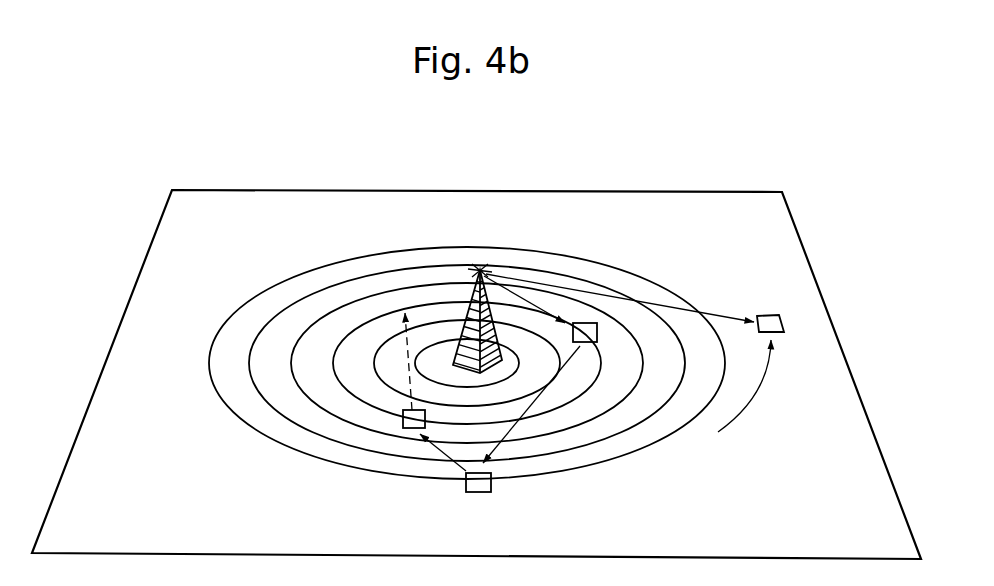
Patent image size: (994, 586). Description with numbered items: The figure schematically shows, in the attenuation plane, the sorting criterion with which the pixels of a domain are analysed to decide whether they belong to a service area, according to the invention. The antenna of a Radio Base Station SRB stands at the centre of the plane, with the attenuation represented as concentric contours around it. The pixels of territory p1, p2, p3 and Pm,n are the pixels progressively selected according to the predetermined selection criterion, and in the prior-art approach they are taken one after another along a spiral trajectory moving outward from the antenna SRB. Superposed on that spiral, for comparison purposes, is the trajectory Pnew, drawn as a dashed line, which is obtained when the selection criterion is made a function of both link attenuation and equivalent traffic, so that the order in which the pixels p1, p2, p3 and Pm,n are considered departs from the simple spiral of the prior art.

The antenna of a Radio Base Station SRB is at (452, 308).
The pixel of territory Pm,n is at (771, 316).
The pixel of territory p1 is at (597, 334).
The pixel of territory p2 is at (481, 492).
The pixel of territory p3 is at (403, 419).
The trajectory Pnew is at (547, 392).